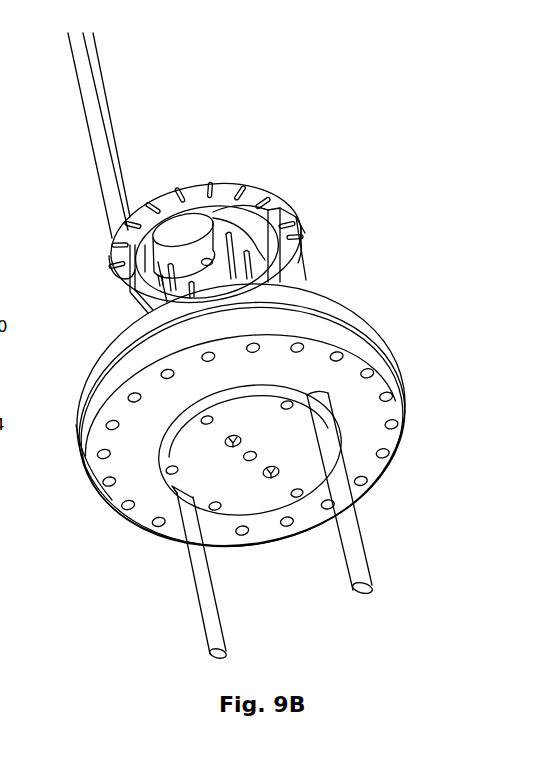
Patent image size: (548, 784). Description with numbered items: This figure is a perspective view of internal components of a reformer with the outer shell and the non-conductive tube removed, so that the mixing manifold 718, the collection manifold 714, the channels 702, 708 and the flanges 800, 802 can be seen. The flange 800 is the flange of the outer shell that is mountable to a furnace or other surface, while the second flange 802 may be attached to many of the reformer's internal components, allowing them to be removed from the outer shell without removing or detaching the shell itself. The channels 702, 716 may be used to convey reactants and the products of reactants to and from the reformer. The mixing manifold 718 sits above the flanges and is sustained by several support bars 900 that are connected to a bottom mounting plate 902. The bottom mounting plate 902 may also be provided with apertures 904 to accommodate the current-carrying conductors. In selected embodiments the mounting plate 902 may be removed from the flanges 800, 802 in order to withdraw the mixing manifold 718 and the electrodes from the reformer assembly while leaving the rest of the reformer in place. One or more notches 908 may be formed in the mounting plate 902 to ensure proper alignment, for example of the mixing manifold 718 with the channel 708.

The channel 702 is at (106, 103).
The channel 708 is at (85, 93).
The collection manifold 714 is at (252, 190).
The channel 716 is at (353, 525).
The mixing manifold 718 is at (245, 218).
The flange 800 is at (103, 358).
The second flange 802 is at (112, 500).
The support bars 900 is at (226, 264).
The bottom mounting plate 902 is at (233, 447).
The apertures 904 is at (264, 476).
The notches 908 is at (303, 378).